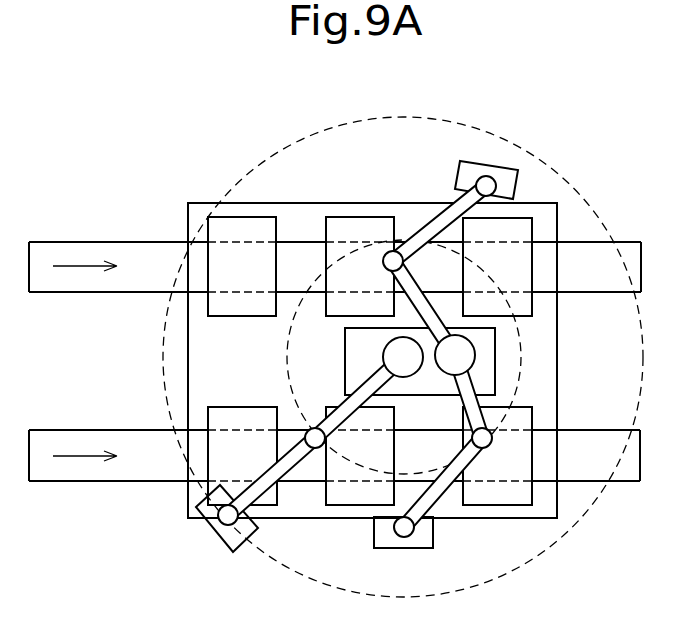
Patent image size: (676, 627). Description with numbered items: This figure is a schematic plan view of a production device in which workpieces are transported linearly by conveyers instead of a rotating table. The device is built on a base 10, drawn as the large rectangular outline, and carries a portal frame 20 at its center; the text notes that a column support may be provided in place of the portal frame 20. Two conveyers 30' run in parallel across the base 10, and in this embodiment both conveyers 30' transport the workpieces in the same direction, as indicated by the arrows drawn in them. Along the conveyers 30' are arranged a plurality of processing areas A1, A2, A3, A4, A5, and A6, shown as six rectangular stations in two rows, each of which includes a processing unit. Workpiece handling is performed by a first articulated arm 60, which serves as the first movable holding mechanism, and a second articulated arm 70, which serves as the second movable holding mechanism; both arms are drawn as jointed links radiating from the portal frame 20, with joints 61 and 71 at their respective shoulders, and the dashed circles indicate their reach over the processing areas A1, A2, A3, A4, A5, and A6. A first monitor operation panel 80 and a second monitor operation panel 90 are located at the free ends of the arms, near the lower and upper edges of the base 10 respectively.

The base 10 is at (340, 202).
The portal frame 20 is at (344, 364).
The conveyer 30' is at (335, 310).
The first articulated arm 60 is at (457, 390).
The first joint 61 is at (397, 350).
The second articulated arm 70 is at (427, 213).
The second joint 71 is at (466, 352).
The first monitor operation panel 80 is at (433, 545).
The second monitor operation panel 90 is at (490, 162).
The processing area A1 is at (265, 217).
The processing area A2 is at (360, 217).
The processing area A3 is at (520, 217).
The processing area A4 is at (219, 407).
The processing area A5 is at (350, 505).
The processing area A6 is at (503, 505).